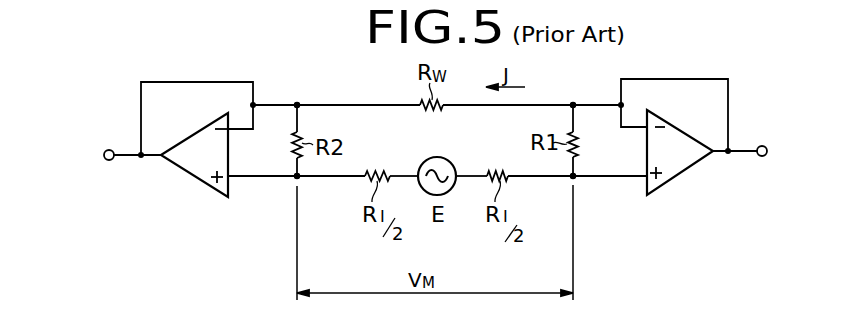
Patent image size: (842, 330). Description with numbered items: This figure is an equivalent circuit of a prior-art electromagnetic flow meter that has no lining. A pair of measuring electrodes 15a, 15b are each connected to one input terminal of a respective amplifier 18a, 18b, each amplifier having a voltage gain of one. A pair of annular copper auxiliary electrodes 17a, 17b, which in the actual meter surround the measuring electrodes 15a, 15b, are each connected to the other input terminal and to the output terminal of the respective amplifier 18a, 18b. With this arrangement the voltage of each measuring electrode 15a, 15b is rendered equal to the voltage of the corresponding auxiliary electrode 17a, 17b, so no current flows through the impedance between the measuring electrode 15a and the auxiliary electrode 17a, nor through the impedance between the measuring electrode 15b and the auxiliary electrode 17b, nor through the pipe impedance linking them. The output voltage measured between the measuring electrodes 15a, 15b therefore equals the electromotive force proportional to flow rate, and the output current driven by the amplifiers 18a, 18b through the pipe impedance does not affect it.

The measuring electrode 15a is at (574, 178).
The measuring electrode 15b is at (296, 178).
The auxiliary electrode 17a is at (573, 104).
The auxiliary electrode 17b is at (297, 104).
The amplifier 18a is at (683, 172).
The amplifier 18b is at (184, 138).